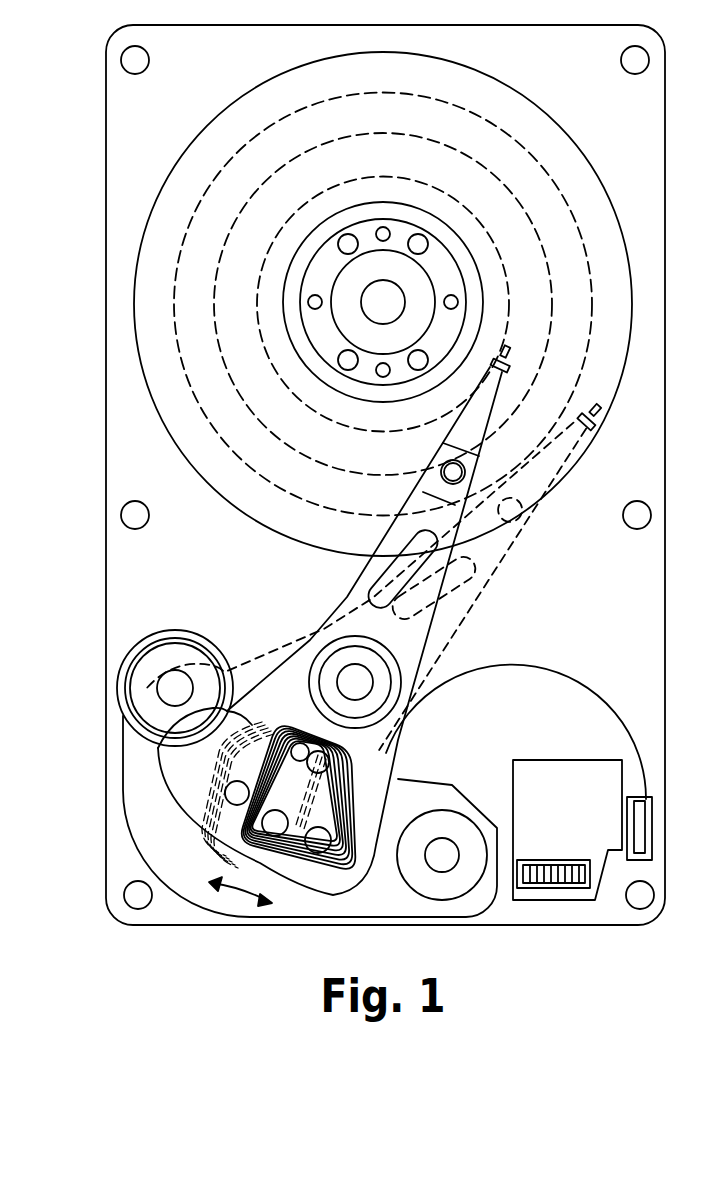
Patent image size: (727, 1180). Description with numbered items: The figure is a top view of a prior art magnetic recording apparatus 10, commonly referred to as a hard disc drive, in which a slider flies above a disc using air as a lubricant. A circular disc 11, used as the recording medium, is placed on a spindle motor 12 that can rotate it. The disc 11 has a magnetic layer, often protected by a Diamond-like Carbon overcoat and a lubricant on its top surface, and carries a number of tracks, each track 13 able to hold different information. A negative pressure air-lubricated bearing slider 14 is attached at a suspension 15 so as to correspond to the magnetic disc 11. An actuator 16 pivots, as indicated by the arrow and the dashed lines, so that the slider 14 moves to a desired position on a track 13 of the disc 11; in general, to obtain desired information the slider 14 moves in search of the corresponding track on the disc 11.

The apparatus 10 is at (120, 406).
The disc 11 is at (157, 198).
The spindle motor 12 is at (335, 331).
The track 13 is at (215, 268).
The negative pressure air-lubricated bearing slider 14 is at (510, 362).
The suspension 15 is at (483, 420).
The actuator 16 is at (357, 595).